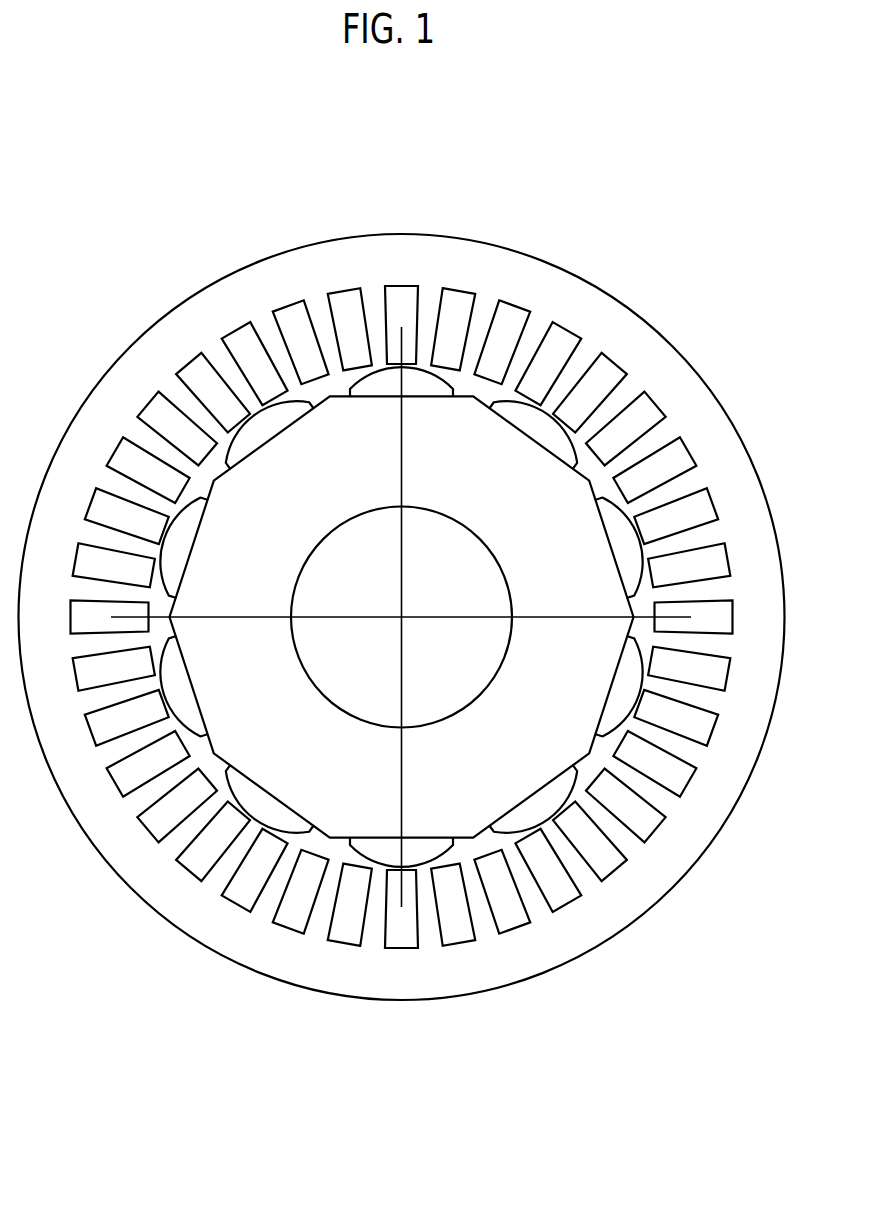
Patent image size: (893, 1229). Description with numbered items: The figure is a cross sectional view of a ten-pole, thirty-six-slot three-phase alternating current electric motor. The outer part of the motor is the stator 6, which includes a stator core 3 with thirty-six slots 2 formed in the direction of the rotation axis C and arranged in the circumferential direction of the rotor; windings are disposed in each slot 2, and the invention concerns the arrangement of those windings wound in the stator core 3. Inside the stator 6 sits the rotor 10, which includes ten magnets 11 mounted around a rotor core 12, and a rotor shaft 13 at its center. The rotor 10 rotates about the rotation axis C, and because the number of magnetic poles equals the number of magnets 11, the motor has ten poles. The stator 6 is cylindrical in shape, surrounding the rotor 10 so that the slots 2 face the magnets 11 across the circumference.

The slot 2 is at (505, 328).
The stator core 3 is at (457, 249).
The stator 6 is at (697, 270).
The rotor 10 is at (317, 390).
The magnet 11 is at (250, 440).
The rotor core 12 is at (240, 727).
The rotor shaft 13 is at (350, 665).
The rotation axis C is at (402, 618).